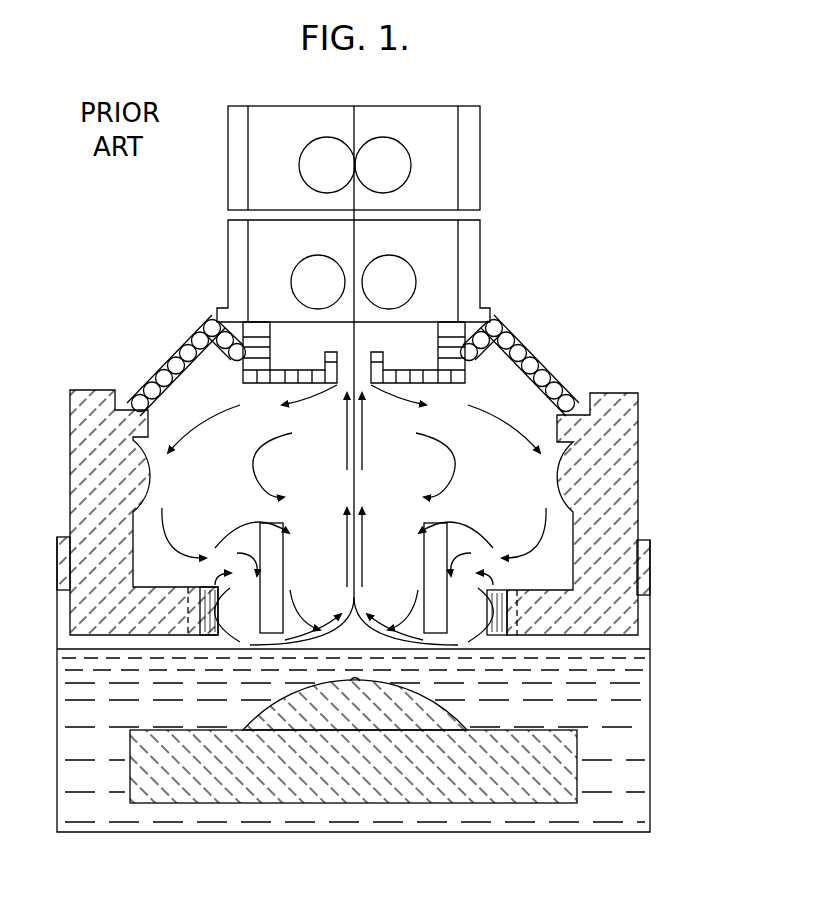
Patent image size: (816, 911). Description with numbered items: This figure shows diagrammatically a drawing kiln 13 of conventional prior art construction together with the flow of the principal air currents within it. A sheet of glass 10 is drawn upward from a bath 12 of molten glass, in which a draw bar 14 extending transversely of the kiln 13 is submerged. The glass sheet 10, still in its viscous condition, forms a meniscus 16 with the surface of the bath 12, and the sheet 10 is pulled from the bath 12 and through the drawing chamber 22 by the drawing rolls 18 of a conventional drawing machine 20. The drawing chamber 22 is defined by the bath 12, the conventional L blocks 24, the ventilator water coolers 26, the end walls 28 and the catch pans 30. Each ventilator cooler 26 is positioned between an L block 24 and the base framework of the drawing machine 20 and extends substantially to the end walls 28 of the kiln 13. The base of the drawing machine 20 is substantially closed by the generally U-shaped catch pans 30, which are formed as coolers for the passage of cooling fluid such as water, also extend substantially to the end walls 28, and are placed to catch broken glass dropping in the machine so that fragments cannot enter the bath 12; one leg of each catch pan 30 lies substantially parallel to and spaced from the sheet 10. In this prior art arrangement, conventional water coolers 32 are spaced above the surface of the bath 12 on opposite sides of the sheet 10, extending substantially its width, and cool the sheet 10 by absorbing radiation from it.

The sheet of glass 10 is at (354, 494).
The bath of molten glass 12 is at (458, 643).
The drawing kiln 13 is at (135, 386).
The heating block 14 is at (360, 804).
The meniscus 16 is at (369, 633).
The drawing rolls 18 is at (337, 148).
The drawing machine 20 is at (483, 226).
The drawing chamber 22 is at (525, 404).
The L blocks 24 is at (150, 484).
The ventilator water coolers 26 is at (167, 364).
The end walls 28 is at (473, 487).
The catch pans 30 is at (295, 366).
The water coolers 32 is at (284, 576).